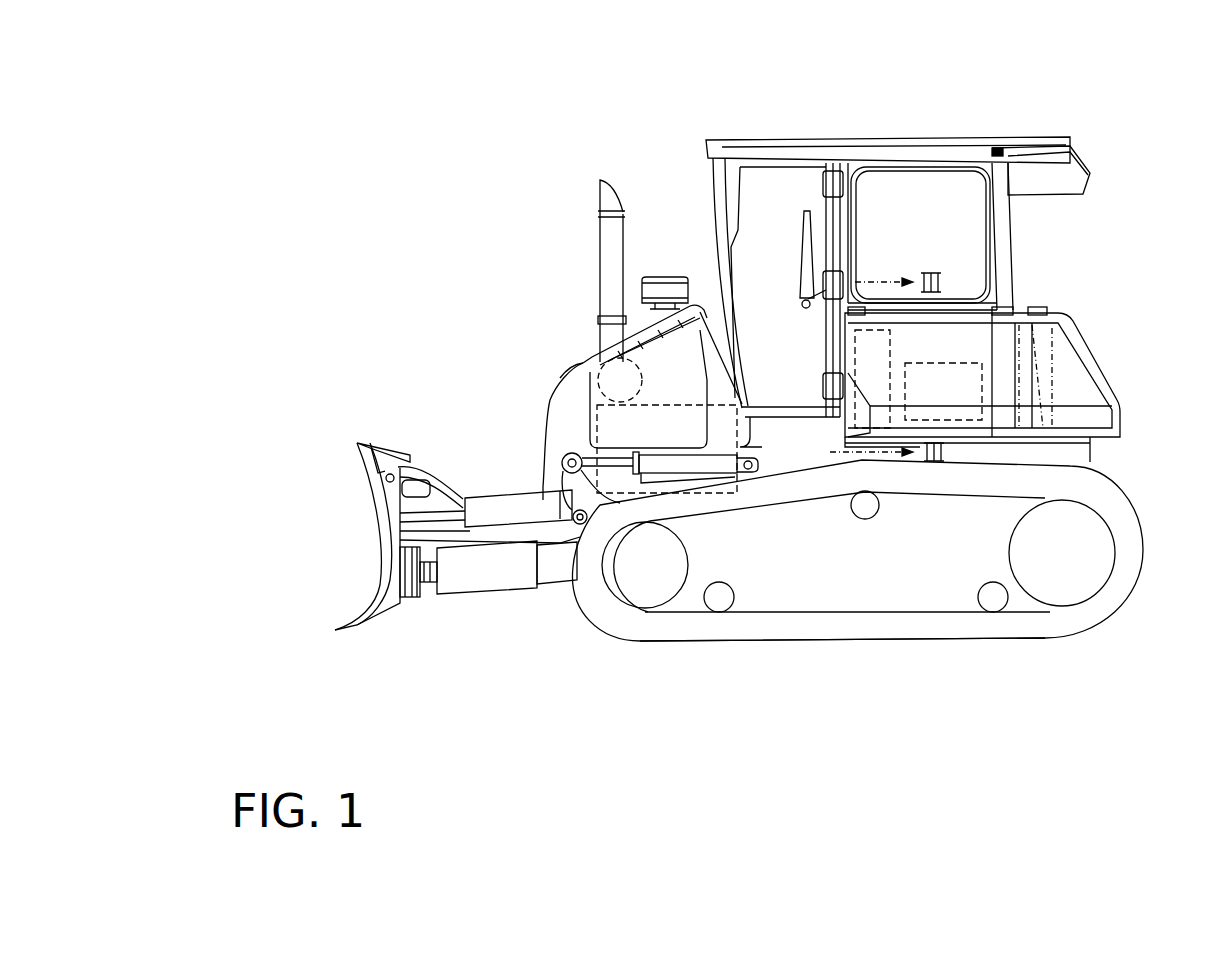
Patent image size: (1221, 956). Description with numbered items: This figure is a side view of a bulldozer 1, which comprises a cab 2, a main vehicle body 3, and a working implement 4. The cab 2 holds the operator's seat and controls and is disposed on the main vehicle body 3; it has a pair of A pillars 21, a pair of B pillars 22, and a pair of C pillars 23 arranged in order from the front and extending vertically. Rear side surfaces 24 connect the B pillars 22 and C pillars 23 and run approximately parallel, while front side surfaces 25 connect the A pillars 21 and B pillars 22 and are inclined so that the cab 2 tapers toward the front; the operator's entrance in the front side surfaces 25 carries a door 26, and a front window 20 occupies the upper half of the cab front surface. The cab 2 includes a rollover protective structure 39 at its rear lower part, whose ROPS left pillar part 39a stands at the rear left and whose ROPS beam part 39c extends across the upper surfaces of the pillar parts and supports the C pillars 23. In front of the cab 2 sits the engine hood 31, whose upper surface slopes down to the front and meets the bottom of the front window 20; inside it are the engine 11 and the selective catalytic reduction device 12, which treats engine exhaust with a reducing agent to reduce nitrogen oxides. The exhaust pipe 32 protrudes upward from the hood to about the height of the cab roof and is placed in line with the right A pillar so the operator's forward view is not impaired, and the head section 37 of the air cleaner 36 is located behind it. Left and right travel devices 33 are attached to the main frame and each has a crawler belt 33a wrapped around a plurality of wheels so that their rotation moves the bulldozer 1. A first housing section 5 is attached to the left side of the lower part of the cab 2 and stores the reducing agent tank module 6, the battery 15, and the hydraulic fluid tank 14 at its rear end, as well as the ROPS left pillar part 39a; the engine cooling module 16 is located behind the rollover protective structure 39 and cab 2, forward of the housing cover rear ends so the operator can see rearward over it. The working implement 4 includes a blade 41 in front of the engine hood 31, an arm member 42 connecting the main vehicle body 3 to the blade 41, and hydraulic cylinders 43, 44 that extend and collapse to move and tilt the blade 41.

The bulldozer 1 is at (468, 158).
The cab 2 is at (919, 130).
The main vehicle body 3 is at (1124, 471).
The working implement 4 is at (465, 610).
The first housing section 5 is at (1115, 396).
The reducing agent tank module 6 is at (853, 440).
The engine 11 is at (600, 415).
The selective catalytic reduction device 12 is at (604, 357).
The hydraulic fluid tank 14 is at (1110, 383).
The battery 15 is at (948, 425).
The engine cooling module 16 is at (1012, 360).
The front window 20 is at (708, 181).
The A pillars 21 is at (721, 206).
The B pillars 22 is at (842, 210).
The C pillars 23 is at (1005, 207).
The rear side surfaces 24 is at (932, 210).
The front side surfaces 25 is at (791, 243).
The door 26 is at (780, 365).
The engine hood 31 is at (568, 380).
The exhaust pipe 32 is at (615, 250).
The travel devices 33 is at (1044, 648).
The crawler belt 33a is at (900, 635).
The air cleaner 36 is at (645, 312).
The head section 37 is at (670, 294).
The rollover protective structure 39 is at (982, 348).
The ROPS left pillar part 39a is at (1003, 440).
The ROPS beam part 39c is at (1050, 311).
The blade 41 is at (387, 563).
The arm member 42 is at (527, 553).
The hydraulic cylinder 43 is at (493, 508).
The hydraulic cylinder 44 is at (620, 468).